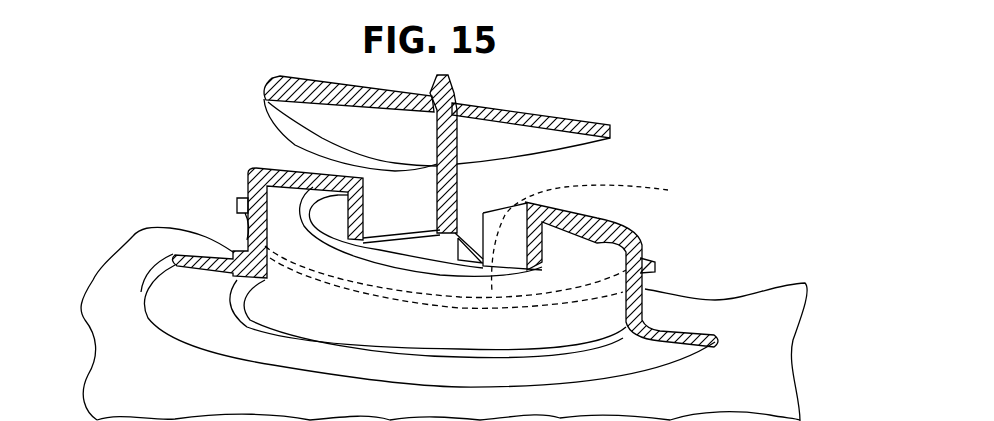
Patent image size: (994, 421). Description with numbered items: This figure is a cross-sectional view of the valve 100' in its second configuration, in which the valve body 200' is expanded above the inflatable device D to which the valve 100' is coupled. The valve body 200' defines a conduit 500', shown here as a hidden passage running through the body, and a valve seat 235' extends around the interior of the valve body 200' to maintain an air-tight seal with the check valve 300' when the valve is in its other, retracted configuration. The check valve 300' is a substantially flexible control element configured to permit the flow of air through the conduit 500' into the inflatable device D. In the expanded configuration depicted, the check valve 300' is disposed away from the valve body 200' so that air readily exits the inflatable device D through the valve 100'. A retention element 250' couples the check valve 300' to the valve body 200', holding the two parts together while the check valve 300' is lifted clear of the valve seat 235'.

The valve 100' is at (688, 117).
The valve body 200' is at (459, 277).
The valve seat 235' is at (448, 292).
The retention element 250' is at (315, 154).
The check valve 300' is at (454, 123).
The conduit 500' is at (606, 234).
The inflatable device D is at (114, 327).